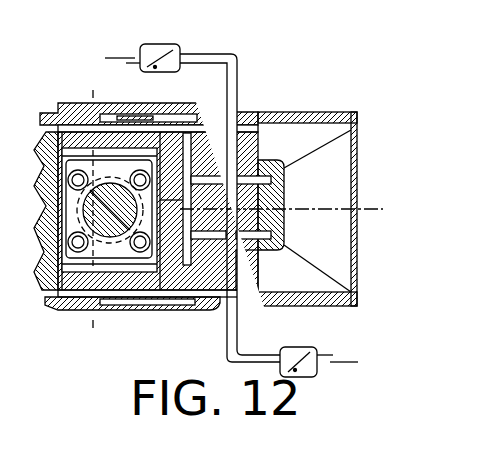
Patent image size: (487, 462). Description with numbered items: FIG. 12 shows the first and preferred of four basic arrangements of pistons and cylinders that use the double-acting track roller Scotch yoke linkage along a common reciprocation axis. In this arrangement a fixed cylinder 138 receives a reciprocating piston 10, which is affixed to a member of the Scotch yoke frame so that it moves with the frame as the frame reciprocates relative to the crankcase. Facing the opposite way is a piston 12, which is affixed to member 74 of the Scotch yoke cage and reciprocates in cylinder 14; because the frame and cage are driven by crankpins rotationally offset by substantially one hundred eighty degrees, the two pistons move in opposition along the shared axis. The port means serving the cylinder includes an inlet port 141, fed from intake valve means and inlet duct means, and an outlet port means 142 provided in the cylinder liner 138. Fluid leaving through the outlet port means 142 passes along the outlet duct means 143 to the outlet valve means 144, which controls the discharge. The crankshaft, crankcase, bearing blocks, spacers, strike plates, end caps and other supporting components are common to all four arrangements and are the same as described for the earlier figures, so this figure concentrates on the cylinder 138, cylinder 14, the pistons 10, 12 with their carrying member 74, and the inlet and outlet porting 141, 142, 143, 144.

The reciprocating piston 10 is at (213, 308).
The oppositely facing piston 12 is at (280, 170).
The cylinder 14 is at (262, 273).
The member of scotch yoke cage 74 is at (280, 203).
The fixed cylinder 138 is at (160, 321).
The inlet port 141 is at (245, 303).
The outlet port means 142 is at (259, 113).
The outlet duct means 143 is at (233, 73).
The outlet valve means 144 is at (182, 50).